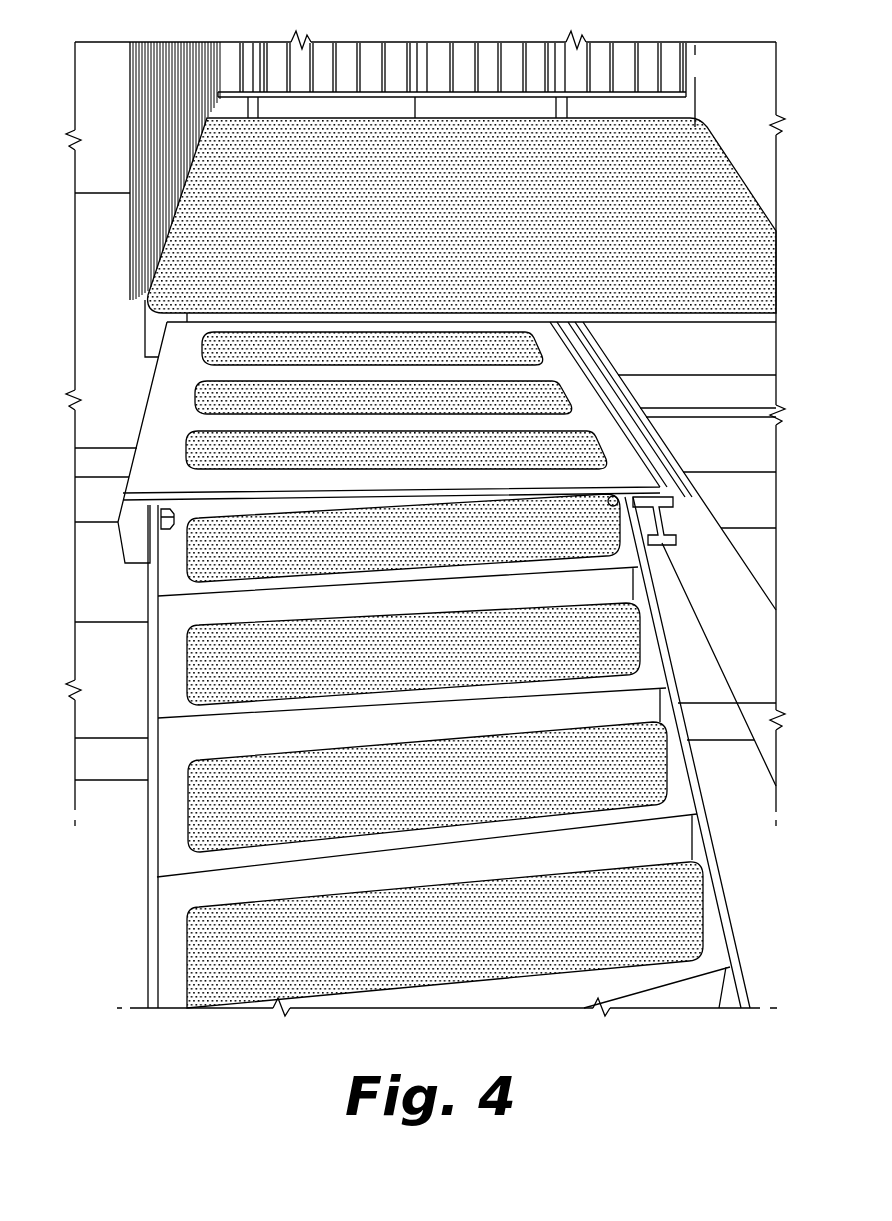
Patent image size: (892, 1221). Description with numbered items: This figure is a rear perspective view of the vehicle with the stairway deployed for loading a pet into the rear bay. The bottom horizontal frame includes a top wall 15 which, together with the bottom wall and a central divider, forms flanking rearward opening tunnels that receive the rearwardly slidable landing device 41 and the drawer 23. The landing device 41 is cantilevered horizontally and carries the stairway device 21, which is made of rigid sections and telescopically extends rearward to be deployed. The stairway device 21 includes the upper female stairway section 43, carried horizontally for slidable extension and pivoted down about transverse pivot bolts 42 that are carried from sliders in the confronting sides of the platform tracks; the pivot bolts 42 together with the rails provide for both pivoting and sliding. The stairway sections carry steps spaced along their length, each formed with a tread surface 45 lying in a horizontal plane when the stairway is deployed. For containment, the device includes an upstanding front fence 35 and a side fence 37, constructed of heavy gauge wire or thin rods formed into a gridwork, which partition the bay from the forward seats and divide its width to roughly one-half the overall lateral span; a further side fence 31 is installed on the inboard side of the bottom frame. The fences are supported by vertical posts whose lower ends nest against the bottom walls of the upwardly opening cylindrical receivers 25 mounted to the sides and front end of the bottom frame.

The top wall 15 is at (403, 263).
The stairway device 21 is at (498, 665).
The drawer 23 is at (758, 756).
The cylindrical receiver 25 is at (145, 332).
The side fence 31 is at (129, 80).
The front fence 35 is at (467, 70).
The side fence 37 is at (241, 62).
The landing device 41 is at (125, 415).
The pivot bolt 42 is at (174, 521).
The female stairway section 43 is at (148, 897).
The tread surface 45 is at (403, 553).